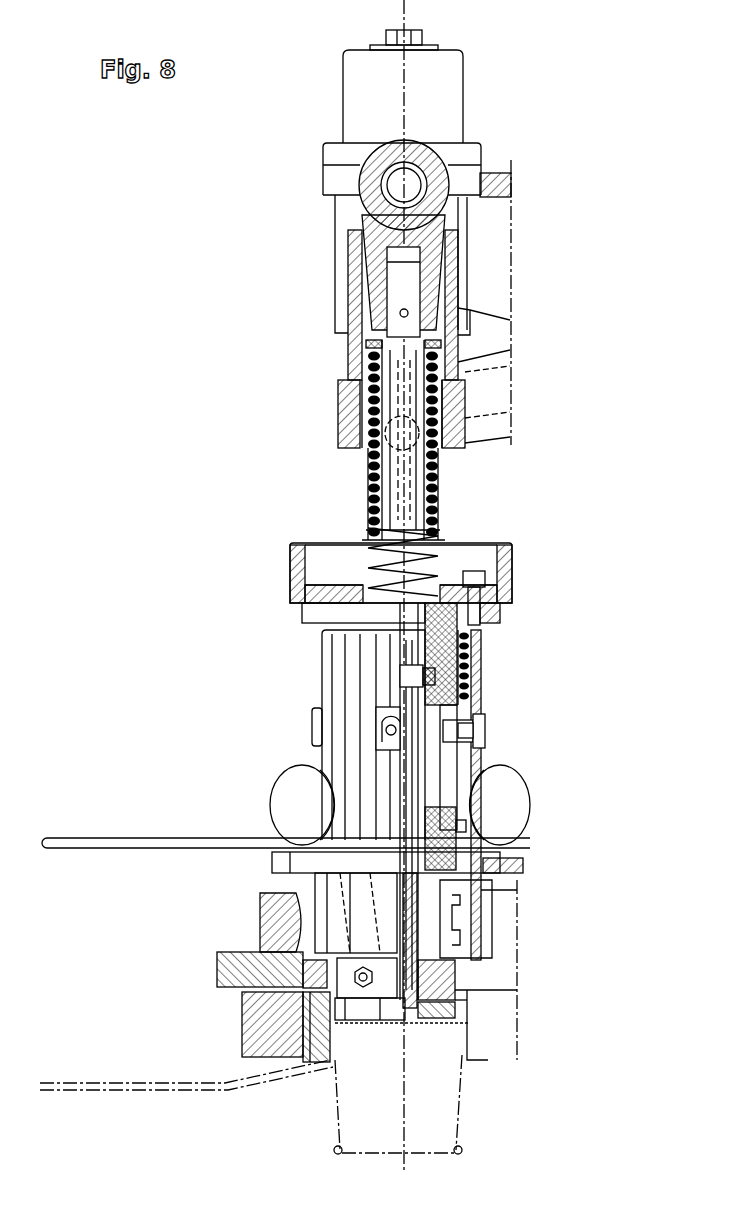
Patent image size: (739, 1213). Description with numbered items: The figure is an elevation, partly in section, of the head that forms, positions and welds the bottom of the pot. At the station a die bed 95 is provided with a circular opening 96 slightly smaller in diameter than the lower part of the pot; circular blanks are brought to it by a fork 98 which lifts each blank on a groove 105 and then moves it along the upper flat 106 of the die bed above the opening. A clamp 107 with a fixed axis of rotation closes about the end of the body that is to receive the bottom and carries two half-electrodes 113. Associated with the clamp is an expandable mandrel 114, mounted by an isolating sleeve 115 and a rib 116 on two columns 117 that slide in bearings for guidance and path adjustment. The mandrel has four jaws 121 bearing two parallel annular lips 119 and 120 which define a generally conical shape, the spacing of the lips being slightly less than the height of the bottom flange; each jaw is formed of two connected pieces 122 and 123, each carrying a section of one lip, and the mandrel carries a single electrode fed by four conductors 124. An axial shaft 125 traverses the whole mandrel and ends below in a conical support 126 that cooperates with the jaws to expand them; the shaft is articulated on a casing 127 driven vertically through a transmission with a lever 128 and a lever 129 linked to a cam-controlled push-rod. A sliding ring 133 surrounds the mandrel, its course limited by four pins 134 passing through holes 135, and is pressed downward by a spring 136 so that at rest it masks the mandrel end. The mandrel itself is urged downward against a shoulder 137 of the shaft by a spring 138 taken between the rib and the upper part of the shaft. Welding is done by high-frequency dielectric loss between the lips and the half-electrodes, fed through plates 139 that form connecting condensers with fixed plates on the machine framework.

The die bed 95 is at (247, 962).
The circular opening 96 is at (328, 977).
The fork 98 is at (265, 937).
The groove 105 is at (298, 932).
The upper flat 106 is at (303, 962).
The clamp 107 is at (248, 1023).
The half-electrodes 113 is at (320, 1050).
The expandable mandrel 114 is at (468, 858).
The isolating sleeve 115 is at (480, 815).
The rib 116 is at (293, 565).
The columns 117 is at (362, 474).
The lip 119 is at (467, 1023).
The lip 120 is at (463, 990).
The jaws 121 is at (365, 1022).
The piece 122 is at (450, 973).
The piece 123 is at (455, 1015).
The conductors 124 is at (282, 793).
The axial shaft 125 is at (412, 723).
The conical support 126 is at (430, 1027).
The casing 127 is at (380, 280).
The lever 128 is at (350, 317).
The lever 129 is at (490, 398).
The sliding ring 133 is at (475, 884).
The pins 134 is at (463, 730).
The holes 135 is at (448, 773).
The spring 136 is at (472, 652).
The shoulder 137 is at (421, 680).
The spring 138 is at (362, 391).
The plates 139 is at (60, 840).